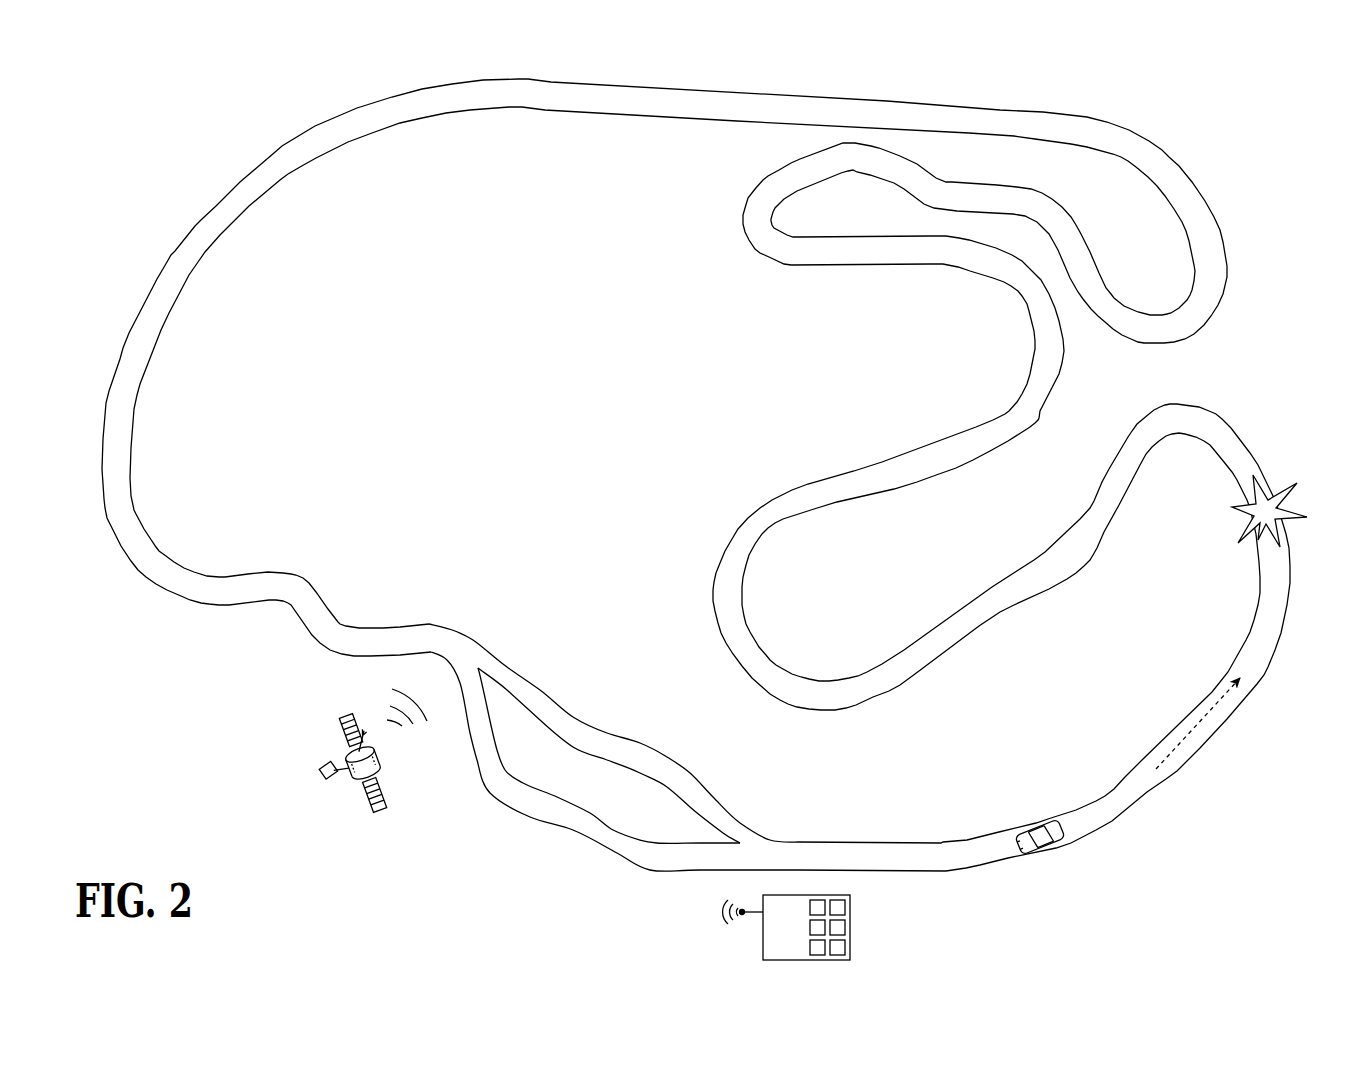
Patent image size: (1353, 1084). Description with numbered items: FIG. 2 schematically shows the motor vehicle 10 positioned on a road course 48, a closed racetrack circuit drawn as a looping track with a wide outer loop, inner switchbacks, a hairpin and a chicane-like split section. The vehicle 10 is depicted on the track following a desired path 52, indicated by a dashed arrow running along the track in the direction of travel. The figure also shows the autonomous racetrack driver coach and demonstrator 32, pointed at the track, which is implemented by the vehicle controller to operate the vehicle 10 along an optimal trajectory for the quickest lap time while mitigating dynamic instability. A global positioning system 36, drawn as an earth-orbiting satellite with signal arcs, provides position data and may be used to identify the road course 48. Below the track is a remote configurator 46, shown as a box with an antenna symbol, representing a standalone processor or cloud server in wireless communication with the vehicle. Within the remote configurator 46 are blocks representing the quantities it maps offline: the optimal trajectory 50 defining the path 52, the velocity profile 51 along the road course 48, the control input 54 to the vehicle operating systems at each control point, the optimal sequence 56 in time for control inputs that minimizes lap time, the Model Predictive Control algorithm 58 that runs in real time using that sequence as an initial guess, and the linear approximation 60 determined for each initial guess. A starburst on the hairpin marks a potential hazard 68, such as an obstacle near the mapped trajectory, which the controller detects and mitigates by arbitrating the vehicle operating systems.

The motor vehicle 10 is at (1043, 851).
The autonomous racetrack driver coach and demonstrator 32 is at (696, 496).
The global positioning system (GPS) 36 is at (331, 789).
The remote configurator 46 is at (799, 936).
The road course 48 is at (944, 97).
The optimal trajectory 50 is at (813, 900).
The velocity profile 51 is at (808, 920).
The desired path 52 is at (1205, 722).
The control input 54 is at (810, 943).
The optimal sequence in time for control inputs 56 is at (846, 905).
The Model Predictive Control (MPC) algorithm 58 is at (846, 928).
The linear approximation 60 is at (846, 948).
The potential hazard 68 is at (1293, 520).